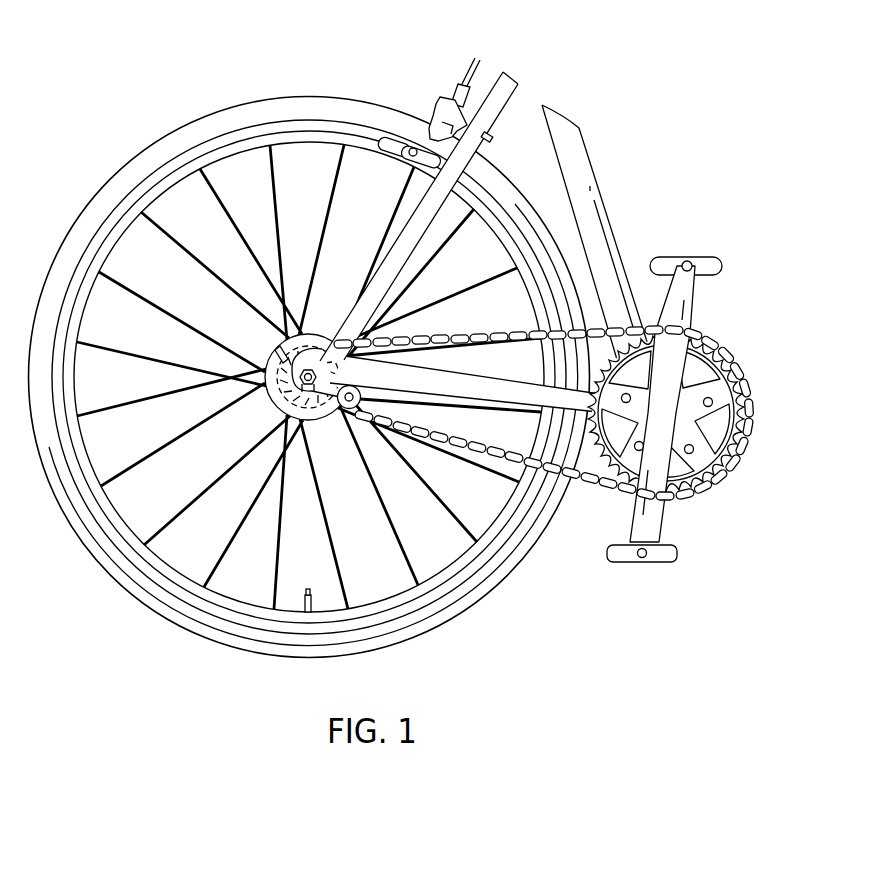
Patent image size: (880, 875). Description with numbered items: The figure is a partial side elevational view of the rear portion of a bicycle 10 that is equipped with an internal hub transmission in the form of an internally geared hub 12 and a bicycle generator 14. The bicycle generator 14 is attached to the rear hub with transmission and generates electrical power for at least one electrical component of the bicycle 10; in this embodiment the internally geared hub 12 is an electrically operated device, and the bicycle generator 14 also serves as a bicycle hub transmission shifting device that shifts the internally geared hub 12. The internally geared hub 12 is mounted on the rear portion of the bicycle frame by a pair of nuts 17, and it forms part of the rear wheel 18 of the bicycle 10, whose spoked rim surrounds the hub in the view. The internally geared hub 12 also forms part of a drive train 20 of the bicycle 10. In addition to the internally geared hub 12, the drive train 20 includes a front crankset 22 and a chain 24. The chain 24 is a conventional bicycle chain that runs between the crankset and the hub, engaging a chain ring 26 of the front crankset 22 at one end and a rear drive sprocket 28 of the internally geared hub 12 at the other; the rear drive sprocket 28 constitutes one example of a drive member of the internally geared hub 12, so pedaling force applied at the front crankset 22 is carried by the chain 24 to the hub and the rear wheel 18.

The bicycle 10 is at (620, 160).
The internally geared hub 12 is at (266, 407).
The bicycle generator 14 is at (324, 325).
The nuts 17 is at (282, 348).
The rear wheel 18 is at (152, 141).
The drive train 20 is at (689, 516).
The front crankset 22 is at (728, 443).
The chain 24 is at (582, 487).
The chain ring 26 is at (712, 473).
The rear drive sprocket 28 is at (338, 410).